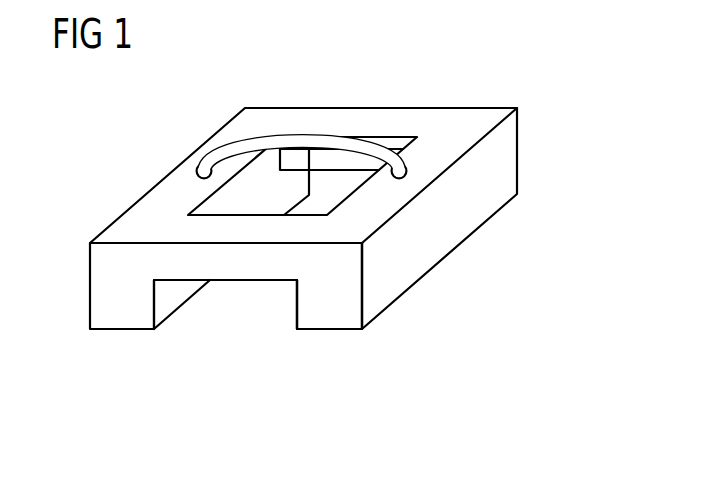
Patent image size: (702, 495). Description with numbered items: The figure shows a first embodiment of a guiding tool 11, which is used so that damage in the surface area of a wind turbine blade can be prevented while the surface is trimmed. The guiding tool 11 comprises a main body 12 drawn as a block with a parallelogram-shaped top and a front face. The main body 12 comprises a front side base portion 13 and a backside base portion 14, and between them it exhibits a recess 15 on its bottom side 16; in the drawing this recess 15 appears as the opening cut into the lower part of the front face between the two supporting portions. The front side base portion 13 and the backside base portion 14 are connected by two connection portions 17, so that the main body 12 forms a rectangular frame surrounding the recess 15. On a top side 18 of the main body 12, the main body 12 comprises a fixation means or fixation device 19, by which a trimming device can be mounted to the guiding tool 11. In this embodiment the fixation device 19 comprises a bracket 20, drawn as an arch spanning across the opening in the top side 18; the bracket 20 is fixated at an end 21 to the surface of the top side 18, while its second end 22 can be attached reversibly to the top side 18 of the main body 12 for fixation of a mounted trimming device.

The guiding tool 11 is at (128, 227).
The main body 12 is at (460, 213).
The front side base portion 13 is at (153, 211).
The backside base portion 14 is at (442, 103).
The recess 15 is at (230, 310).
The bottom side 16 is at (328, 330).
The connection portions 17 is at (223, 147).
The top side 18 is at (453, 143).
The fixation device 19 is at (301, 112).
The bracket 20 is at (307, 143).
The end 21 is at (195, 171).
The second end 22 is at (408, 174).